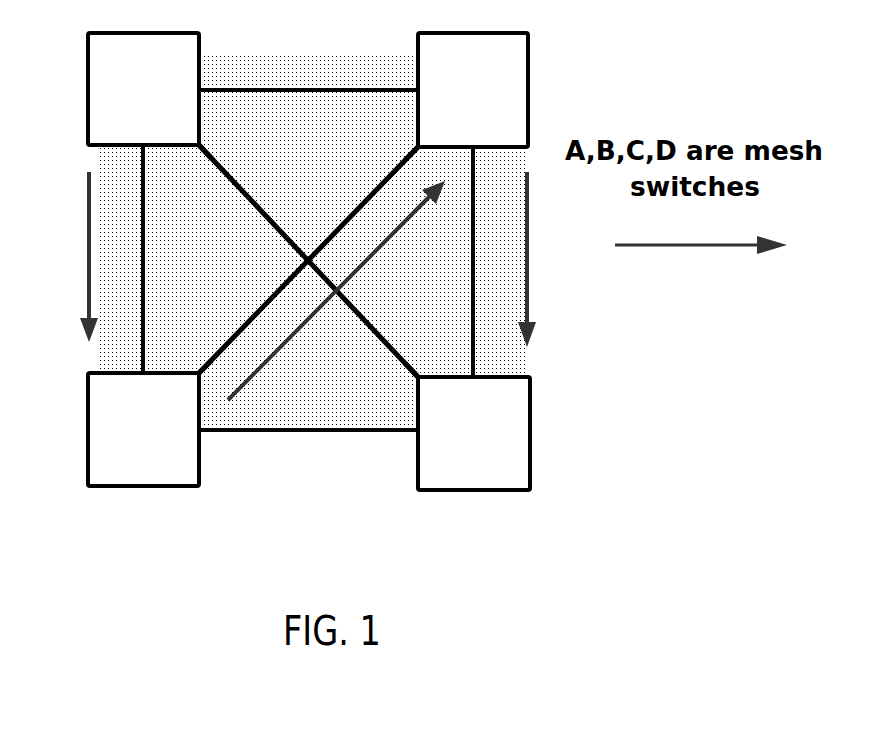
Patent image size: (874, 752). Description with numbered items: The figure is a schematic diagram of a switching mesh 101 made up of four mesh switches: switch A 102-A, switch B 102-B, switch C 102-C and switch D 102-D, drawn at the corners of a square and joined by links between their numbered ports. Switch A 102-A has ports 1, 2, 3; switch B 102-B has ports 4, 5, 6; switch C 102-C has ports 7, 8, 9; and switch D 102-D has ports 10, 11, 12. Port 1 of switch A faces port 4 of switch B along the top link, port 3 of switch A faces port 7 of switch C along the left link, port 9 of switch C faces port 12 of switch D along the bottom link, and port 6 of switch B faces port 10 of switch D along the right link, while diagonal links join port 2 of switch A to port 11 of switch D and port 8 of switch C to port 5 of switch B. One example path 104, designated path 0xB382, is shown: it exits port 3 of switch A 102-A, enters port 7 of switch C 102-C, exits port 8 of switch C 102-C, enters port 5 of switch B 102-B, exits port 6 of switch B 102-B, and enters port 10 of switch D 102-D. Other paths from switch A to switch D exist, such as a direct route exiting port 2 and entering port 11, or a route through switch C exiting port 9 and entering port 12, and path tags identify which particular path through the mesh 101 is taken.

The switching mesh 101 is at (336, 120).
The switch A 102-A is at (143, 89).
The switch B 102-B is at (473, 90).
The switch C 102-C is at (143, 429).
The switch D 102-D is at (474, 433).
The path 104 is at (433, 286).
The port 1 of switch A 1 is at (213, 76).
The port 2 of switch A 2 is at (219, 152).
The port 3 of switch A 3 is at (132, 164).
The port 4 of switch B 4 is at (404, 77).
The port 5 of switch B 5 is at (400, 152).
The port 6 of switch B 6 is at (486, 167).
The port 7 of switch C 7 is at (131, 357).
The port 8 of switch C 8 is at (215, 376).
The port 9 of switch C 9 is at (212, 452).
The port 10 of switch D 10 is at (494, 361).
The port 11 of switch D 11 is at (401, 377).
The port 12 of switch D 12 is at (402, 453).